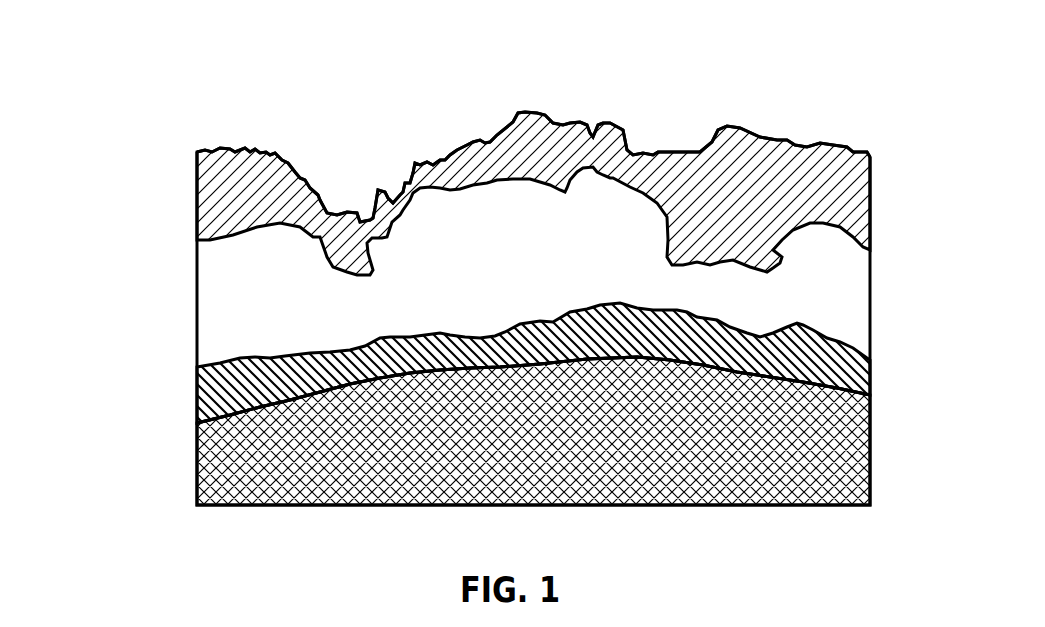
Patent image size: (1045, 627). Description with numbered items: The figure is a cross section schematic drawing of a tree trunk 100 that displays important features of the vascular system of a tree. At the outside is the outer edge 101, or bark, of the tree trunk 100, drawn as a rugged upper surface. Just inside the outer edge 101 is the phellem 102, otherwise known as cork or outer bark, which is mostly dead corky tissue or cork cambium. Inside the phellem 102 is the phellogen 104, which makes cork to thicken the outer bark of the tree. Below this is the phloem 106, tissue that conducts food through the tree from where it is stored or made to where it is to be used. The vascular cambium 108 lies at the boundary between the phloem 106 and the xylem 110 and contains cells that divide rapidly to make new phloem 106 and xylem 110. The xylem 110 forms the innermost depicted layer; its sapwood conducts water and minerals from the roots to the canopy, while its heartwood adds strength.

The tree trunk 100 is at (147, 83).
The outer edge 101 is at (258, 152).
The phellem 102 is at (282, 195).
The phellogen 104 is at (448, 217).
The phloem 106 is at (538, 343).
The vascular cambium 108 is at (705, 360).
The xylem 110 is at (795, 410).